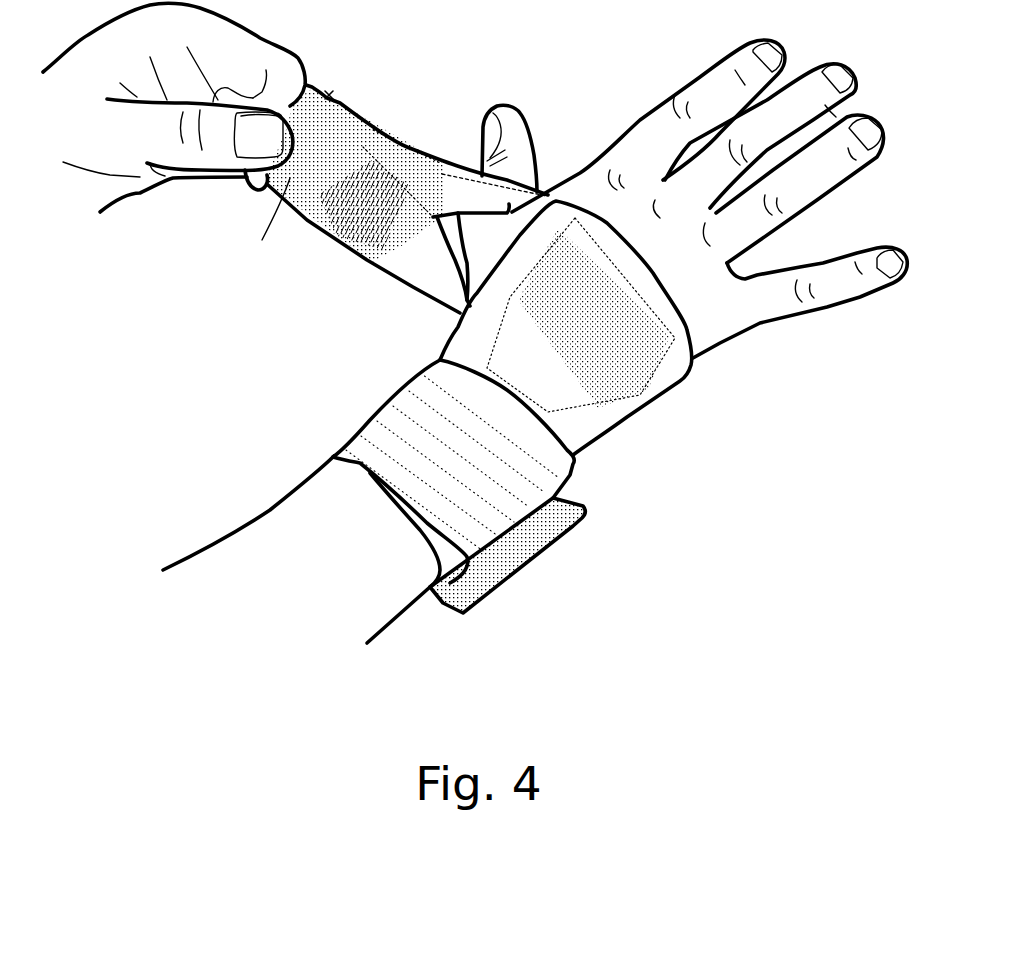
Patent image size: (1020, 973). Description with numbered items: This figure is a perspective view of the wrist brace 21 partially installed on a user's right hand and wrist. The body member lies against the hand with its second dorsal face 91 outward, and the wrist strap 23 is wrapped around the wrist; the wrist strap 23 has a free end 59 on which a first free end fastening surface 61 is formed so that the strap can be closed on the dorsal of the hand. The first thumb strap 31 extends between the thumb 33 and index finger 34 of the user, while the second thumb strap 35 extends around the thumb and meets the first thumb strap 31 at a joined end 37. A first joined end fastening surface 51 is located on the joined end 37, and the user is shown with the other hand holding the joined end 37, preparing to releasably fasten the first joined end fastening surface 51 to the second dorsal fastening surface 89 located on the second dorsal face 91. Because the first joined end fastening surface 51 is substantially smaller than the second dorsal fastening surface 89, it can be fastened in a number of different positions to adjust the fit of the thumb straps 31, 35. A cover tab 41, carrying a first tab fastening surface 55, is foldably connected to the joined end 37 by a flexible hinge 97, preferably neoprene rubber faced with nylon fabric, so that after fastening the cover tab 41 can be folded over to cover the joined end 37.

The wrist brace 21 is at (522, 344).
The wrist strap 23 is at (357, 485).
The first thumb strap 31 is at (463, 198).
The thumb 33 is at (517, 163).
The index finger 34 is at (640, 143).
The second thumb strap 35 is at (443, 295).
The joined end 37 is at (380, 181).
The cover tab 41 is at (331, 95).
The first joined end fastening surface 51 is at (367, 187).
The first tab fastening surface 55 is at (290, 178).
The free end 59 is at (572, 545).
The first free end fastening surface 61 is at (540, 584).
The second dorsal fastening surface 89 is at (633, 307).
The second dorsal face 91 is at (578, 351).
The flexible hinge 97 is at (363, 147).